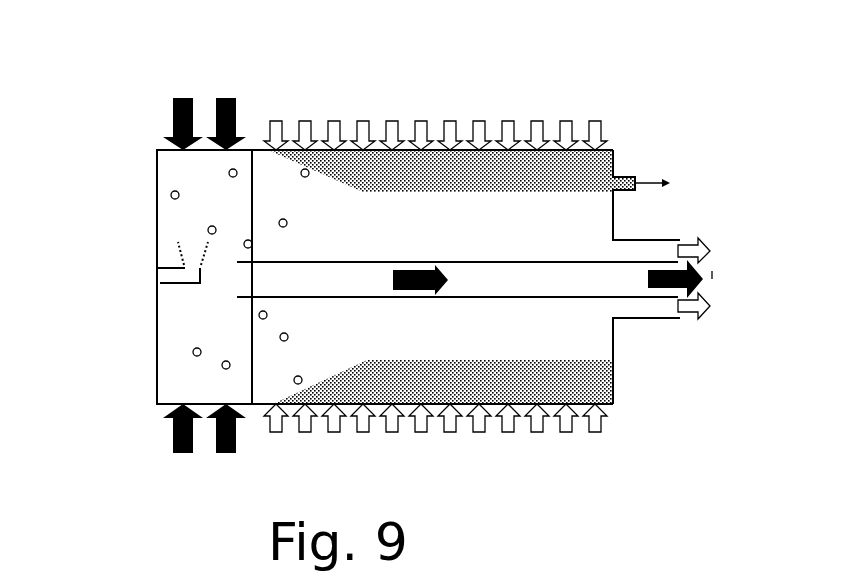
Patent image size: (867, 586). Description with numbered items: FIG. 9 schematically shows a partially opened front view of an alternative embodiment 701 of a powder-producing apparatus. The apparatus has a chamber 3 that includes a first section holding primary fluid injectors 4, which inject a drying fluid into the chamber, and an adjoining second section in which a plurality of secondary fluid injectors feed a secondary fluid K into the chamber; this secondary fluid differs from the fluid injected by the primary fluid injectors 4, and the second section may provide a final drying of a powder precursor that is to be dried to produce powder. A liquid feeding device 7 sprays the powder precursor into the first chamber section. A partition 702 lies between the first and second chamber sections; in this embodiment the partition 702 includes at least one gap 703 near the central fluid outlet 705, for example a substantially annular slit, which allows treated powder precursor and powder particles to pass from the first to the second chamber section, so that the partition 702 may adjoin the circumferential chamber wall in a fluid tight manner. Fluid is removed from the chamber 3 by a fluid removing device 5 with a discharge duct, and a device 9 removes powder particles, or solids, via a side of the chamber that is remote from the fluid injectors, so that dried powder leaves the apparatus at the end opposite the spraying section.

The apparatus embodiment 701 is at (123, 147).
The partition 702 is at (252, 197).
The gap 703 is at (243, 312).
The liquid feeding device 7 is at (160, 276).
The chamber 3 is at (152, 424).
The fluid injectors 4 is at (204, 289).
The secondary fluid K is at (510, 105).
The device for removing powder particles 9 is at (643, 141).
The fluid removing device 5 is at (656, 236).
The central fluid outlet 705 is at (633, 297).